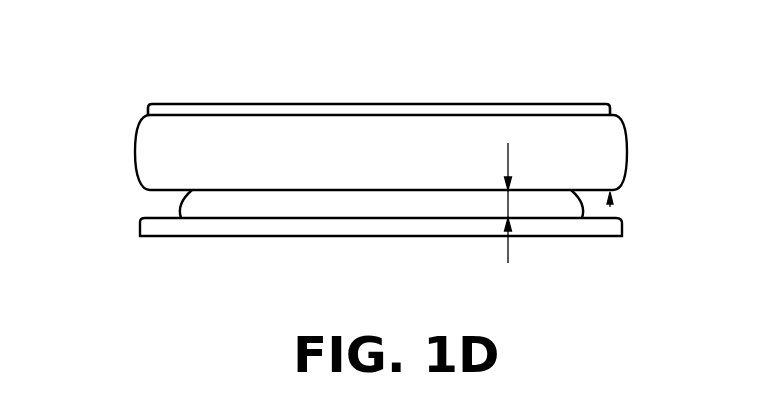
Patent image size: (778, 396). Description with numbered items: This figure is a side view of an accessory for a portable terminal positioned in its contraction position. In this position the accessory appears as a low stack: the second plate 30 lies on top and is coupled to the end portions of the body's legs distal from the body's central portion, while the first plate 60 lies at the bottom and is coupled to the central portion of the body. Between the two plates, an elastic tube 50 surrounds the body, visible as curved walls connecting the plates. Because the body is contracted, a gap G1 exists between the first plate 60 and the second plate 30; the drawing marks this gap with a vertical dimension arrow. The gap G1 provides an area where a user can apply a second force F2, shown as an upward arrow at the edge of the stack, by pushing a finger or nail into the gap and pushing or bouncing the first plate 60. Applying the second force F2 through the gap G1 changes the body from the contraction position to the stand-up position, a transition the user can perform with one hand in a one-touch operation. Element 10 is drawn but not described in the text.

The display panel / top plate 10 is at (240, 107).
The second plate 30 is at (143, 160).
The elastic tube 50 is at (244, 207).
The first plate 60 is at (340, 223).
The gap G1 is at (512, 221).
The second force F2 is at (610, 213).